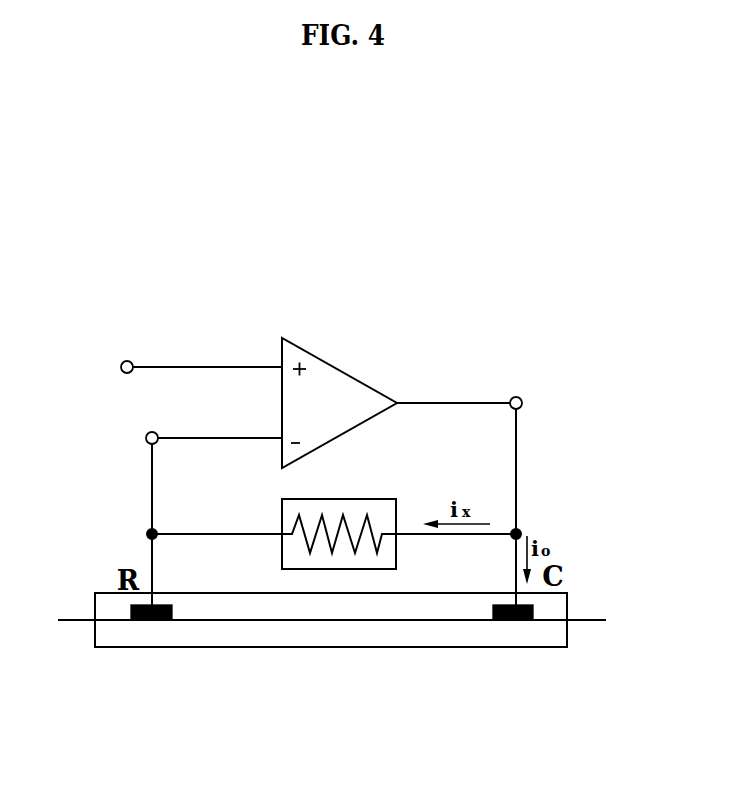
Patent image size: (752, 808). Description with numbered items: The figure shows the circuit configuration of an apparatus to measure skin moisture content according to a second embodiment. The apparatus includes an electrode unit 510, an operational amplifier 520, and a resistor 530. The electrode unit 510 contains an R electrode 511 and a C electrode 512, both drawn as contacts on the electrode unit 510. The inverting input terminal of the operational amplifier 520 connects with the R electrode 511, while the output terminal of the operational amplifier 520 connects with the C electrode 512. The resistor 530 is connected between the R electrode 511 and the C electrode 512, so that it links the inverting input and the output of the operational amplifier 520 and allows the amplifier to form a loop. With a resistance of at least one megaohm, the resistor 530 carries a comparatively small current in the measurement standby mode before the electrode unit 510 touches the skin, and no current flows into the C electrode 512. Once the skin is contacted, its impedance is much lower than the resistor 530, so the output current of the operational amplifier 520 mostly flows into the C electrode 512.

The electrode unit 510 is at (567, 630).
The R electrode 511 is at (150, 622).
The C electrode 512 is at (513, 622).
The operational amplifier 520 is at (340, 367).
The resistor 530 is at (375, 500).